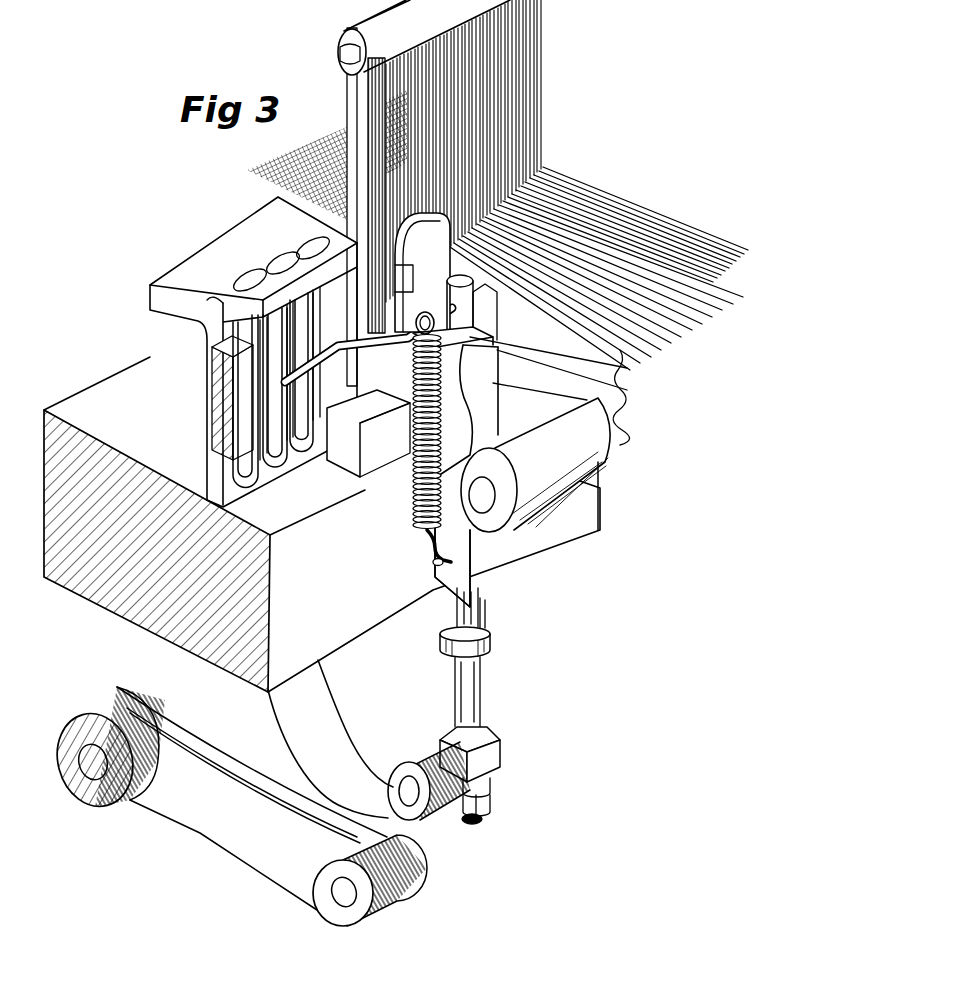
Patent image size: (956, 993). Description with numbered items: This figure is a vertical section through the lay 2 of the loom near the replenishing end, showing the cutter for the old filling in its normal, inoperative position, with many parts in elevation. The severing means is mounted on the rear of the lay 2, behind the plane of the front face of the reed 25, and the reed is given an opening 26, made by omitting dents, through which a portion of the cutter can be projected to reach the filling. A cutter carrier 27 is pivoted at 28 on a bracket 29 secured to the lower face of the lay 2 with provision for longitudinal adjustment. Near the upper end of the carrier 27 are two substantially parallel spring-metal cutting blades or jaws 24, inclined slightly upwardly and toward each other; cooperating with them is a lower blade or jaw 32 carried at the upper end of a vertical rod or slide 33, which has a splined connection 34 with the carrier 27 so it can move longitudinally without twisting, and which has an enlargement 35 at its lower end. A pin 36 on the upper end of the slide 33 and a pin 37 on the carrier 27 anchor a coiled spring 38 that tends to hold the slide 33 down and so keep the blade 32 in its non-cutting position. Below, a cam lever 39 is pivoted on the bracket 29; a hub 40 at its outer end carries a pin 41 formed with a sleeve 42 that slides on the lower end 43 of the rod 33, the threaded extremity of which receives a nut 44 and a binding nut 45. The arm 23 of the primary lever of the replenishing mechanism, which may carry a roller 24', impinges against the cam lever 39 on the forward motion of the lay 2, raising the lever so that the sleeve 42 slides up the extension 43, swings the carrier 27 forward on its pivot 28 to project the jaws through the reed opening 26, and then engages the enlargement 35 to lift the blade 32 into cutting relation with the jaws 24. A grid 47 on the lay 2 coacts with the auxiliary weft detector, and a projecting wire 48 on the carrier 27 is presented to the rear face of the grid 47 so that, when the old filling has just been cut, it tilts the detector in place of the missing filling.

The lay 2 is at (92, 578).
The arm 23 is at (218, 838).
The cutting blades or jaws 24 is at (369, 263).
The roller 24' is at (381, 891).
The reed 25 is at (338, 44).
The opening 26 is at (400, 72).
The cutter carrier 27 is at (478, 560).
The pivot 28 is at (482, 495).
The bracket 29 is at (582, 452).
The lower blade or jaw 32 is at (398, 305).
The vertical rod or slide 33 is at (458, 618).
The splined connection 34 is at (484, 612).
The enlargement 35 is at (491, 650).
The pin 36 is at (487, 350).
The pin 37 is at (428, 565).
The coiled spring 38 is at (418, 473).
The cam lever 39 is at (314, 726).
The hub 40 is at (427, 813).
The pin 41 is at (409, 786).
The sleeve 42 is at (500, 753).
The lower end or extension 43 is at (478, 712).
The nut 44 is at (493, 780).
The binding nut 45 is at (493, 801).
The grid 47 is at (225, 305).
The projecting portion or wire 48 is at (283, 392).